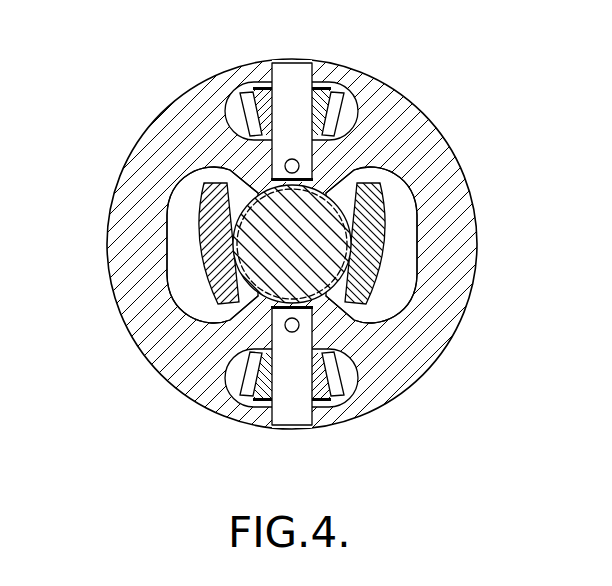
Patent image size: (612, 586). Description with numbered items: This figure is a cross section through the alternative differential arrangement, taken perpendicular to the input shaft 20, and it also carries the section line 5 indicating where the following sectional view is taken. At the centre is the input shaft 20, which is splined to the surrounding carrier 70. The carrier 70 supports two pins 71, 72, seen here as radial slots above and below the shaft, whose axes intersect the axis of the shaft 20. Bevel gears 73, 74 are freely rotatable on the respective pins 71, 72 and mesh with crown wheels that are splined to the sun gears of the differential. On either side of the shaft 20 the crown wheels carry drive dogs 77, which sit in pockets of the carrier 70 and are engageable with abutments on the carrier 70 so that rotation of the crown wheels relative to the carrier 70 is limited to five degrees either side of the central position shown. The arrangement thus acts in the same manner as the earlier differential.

The carrier 70 is at (456, 288).
The pin 71 is at (293, 82).
The pin 72 is at (291, 403).
The bevel gear 73 is at (258, 97).
The bevel gear 74 is at (330, 385).
The input shaft 20 is at (312, 230).
The drive dogs 77 is at (220, 268).
The section line 5- 5 is at (93, 245).